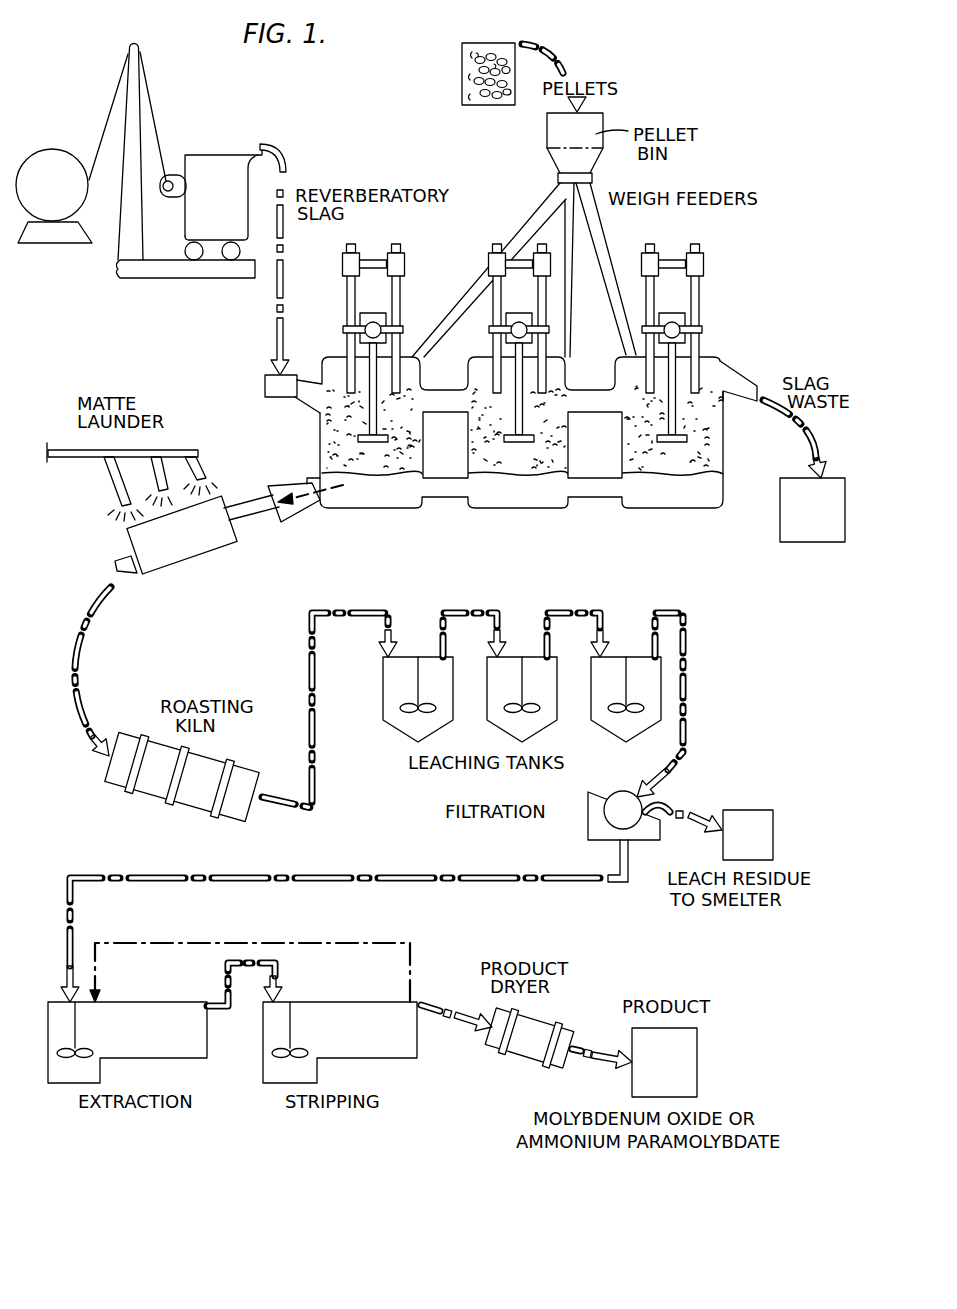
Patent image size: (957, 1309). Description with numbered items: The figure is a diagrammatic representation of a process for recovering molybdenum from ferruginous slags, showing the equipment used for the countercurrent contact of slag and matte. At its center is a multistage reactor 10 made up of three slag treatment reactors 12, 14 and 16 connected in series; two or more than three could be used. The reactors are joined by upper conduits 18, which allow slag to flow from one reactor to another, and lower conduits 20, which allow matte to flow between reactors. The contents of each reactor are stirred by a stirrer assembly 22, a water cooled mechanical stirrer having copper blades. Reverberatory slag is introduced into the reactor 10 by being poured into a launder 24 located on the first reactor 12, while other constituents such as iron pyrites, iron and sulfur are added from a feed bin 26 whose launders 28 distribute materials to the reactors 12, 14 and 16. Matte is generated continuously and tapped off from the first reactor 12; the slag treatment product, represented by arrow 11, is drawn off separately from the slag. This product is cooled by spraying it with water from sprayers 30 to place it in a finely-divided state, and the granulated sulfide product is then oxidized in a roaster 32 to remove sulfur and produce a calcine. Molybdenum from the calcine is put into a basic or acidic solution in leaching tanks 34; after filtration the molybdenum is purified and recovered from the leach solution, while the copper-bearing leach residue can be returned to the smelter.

The multistage reactor 10 is at (388, 515).
The slag treatment product 11 is at (294, 513).
The first reactor 12 is at (318, 447).
The second reactor 14 is at (516, 509).
The third reactor 16 is at (723, 462).
The upper conduits 18 is at (446, 390).
The lower conduits 20 is at (445, 498).
The stirrer assembly 22 is at (515, 252).
The launder 24 is at (265, 387).
The feed bin 26 is at (547, 129).
The launders 28 is at (535, 222).
The sprayers 30 is at (115, 485).
The roaster 32 is at (108, 783).
The leaching tanks 34 is at (408, 657).